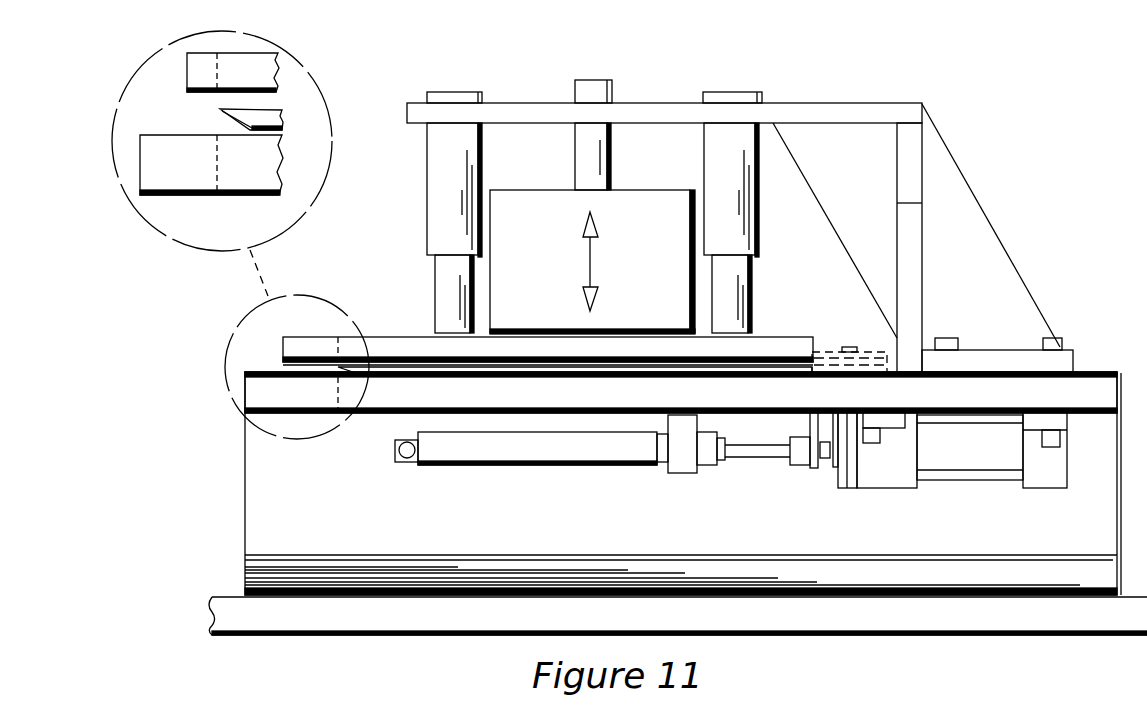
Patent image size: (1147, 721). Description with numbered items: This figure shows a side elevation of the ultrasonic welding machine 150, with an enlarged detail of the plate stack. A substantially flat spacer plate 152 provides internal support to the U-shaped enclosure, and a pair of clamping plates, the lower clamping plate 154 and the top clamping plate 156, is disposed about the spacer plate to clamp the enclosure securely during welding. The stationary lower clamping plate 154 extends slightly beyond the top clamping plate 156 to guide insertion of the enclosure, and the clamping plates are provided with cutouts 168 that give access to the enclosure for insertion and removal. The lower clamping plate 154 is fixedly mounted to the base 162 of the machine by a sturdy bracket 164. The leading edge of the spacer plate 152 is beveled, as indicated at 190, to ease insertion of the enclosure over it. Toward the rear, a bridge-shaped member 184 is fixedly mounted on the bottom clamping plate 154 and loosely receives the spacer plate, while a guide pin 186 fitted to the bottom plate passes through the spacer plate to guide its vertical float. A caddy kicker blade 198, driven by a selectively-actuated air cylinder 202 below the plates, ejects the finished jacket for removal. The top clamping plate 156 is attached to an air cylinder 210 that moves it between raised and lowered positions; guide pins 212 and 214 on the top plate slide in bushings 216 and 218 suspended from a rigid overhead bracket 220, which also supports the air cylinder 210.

The ultrasonic welding machine 150 is at (160, 575).
The spacer plate 152 is at (273, 120).
The lower clamping plate 154 is at (253, 183).
The top clamping plate 156 is at (273, 72).
The base 162 is at (387, 620).
The bracket 164 is at (252, 487).
The cutouts 168 is at (198, 70).
The bridge-shaped member 184 is at (822, 351).
The guide pin 186 is at (850, 347).
The beveled leading edge 190 is at (222, 112).
The caddy kicker blade 198 is at (807, 420).
The air cylinder 202 is at (895, 482).
The air cylinder 210 is at (513, 197).
The guide pin 212 is at (440, 272).
The guide pin 214 is at (741, 273).
The bushing 216 is at (433, 163).
The bushing 218 is at (746, 188).
The overhead bracket 220 is at (825, 107).